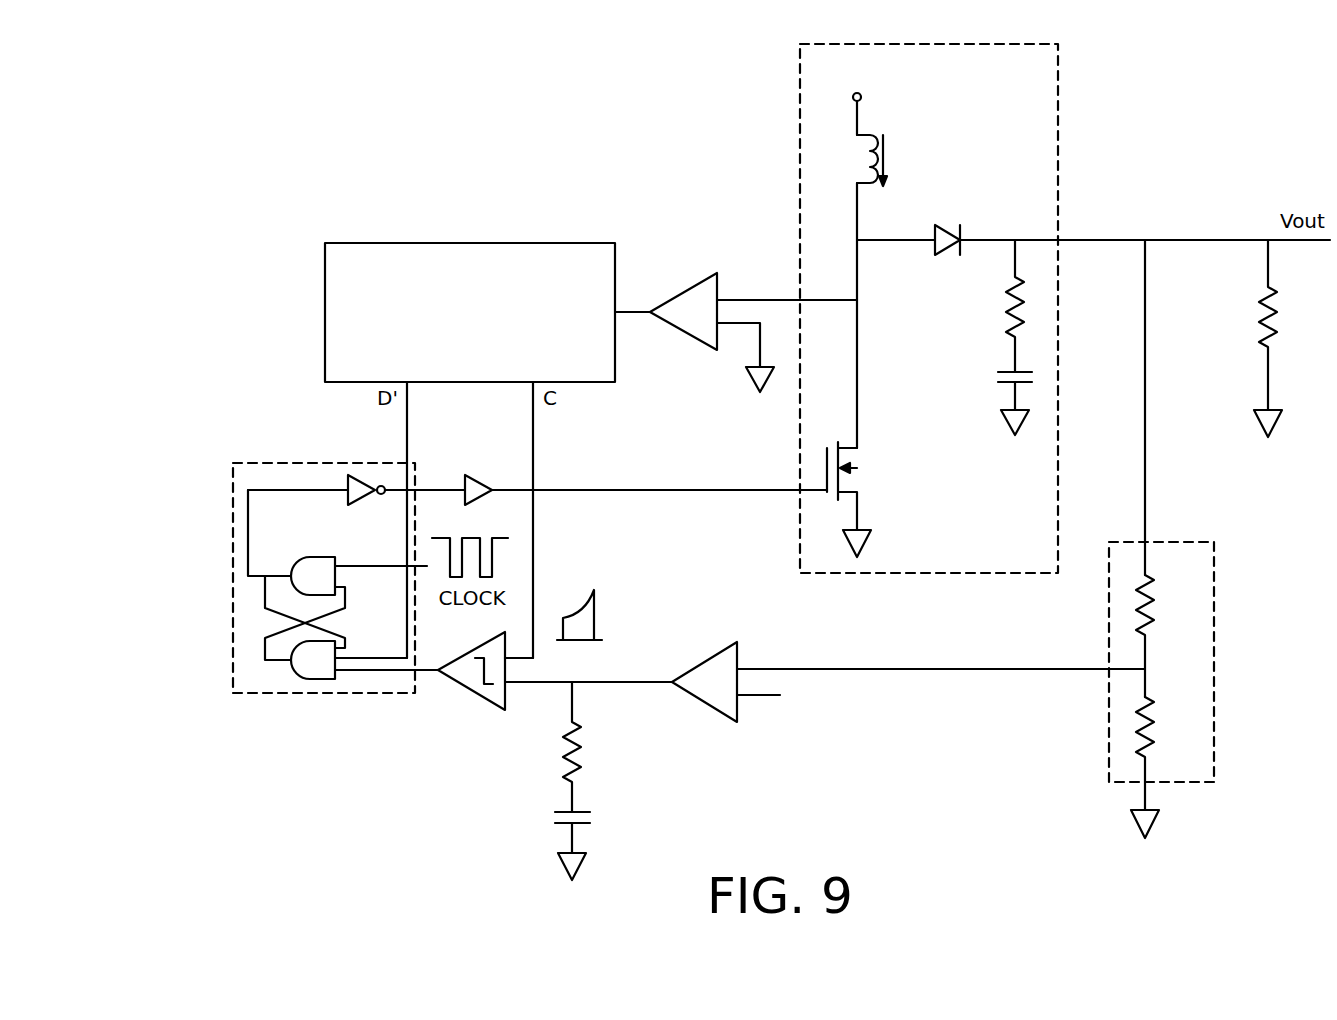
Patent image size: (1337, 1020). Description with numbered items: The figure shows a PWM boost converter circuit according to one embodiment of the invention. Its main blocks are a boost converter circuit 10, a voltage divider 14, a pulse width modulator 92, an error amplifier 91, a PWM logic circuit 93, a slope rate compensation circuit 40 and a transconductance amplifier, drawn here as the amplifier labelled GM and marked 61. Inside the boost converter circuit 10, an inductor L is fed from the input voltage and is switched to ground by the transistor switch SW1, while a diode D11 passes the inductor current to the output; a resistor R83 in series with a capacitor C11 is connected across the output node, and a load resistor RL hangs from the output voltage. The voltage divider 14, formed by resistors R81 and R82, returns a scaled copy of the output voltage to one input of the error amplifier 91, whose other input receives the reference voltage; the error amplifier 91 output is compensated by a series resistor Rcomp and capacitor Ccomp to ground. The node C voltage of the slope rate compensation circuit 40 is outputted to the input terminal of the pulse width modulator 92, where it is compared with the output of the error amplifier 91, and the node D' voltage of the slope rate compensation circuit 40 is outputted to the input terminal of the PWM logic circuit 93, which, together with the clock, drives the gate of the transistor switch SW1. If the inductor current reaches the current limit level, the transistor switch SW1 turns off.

The boost converter circuit 10 is at (1058, 88).
The voltage divider 14 is at (1199, 690).
The slope rate compensation circuit 40 is at (472, 243).
The transconductance amplifier GM 61 is at (695, 290).
The error amplifier 91 is at (710, 658).
The pulse width modulator 92 is at (470, 694).
The PWM logic circuit 93 is at (233, 578).
The transistor switch SW1 is at (868, 478).
The inductor L is at (855, 159).
The diode D11 is at (948, 224).
The resistor R83 is at (992, 306).
The capacitor C11 is at (994, 402).
The load resistor RL is at (1257, 338).
The feedback resistor R81 is at (1169, 636).
The feedback resistor R82 is at (1169, 753).
The compensation resistor Rcomp is at (537, 747).
The compensation capacitor Ccomp is at (536, 842).